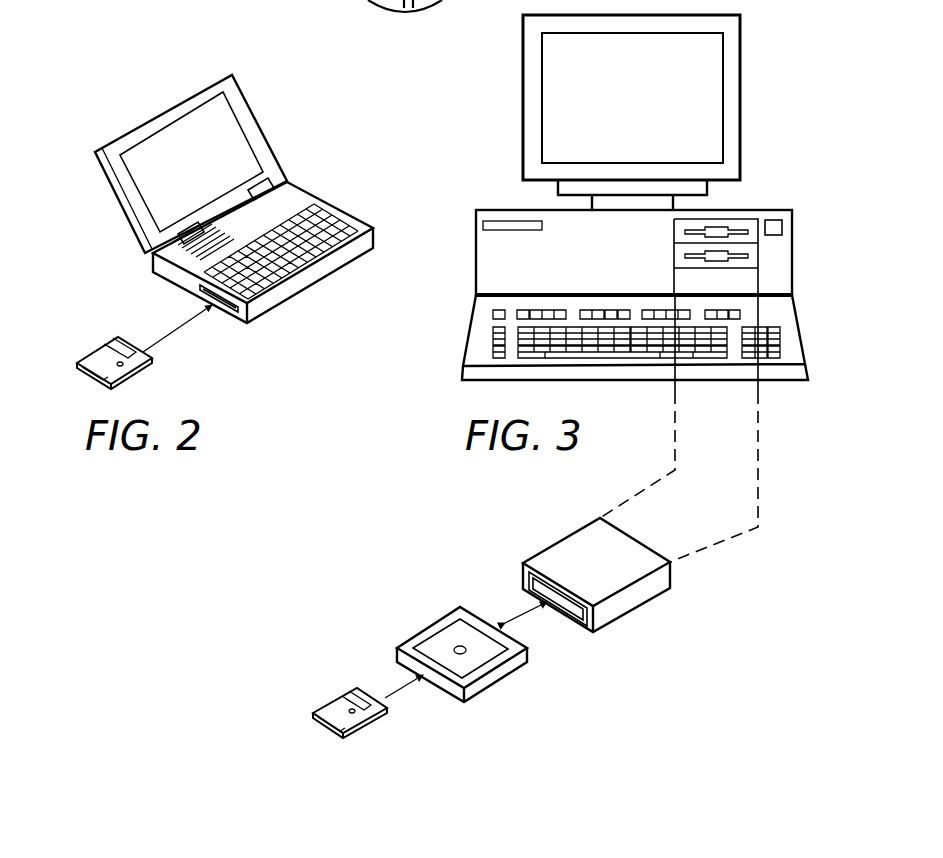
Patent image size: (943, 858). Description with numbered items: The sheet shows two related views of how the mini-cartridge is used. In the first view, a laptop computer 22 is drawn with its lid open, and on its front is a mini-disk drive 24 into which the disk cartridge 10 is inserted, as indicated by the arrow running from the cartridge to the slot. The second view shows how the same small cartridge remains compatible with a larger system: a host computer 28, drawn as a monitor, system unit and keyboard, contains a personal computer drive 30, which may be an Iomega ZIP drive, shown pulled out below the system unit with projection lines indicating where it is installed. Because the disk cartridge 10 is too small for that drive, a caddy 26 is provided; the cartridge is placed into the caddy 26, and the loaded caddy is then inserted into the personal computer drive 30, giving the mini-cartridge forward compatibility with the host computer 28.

In FIG. 2, the disk cartridge 10 is at (102, 357).
In FIG. 3, the disk cartridge 10 is at (332, 702).
In FIG. 2, the laptop computer 22 is at (310, 278).
In FIG. 2, the mini-disk drive 24 is at (220, 308).
In FIG. 3, the caddy 26 is at (450, 617).
In FIG. 3, the host computer 28 is at (760, 210).
In FIG. 3, the personal computer drive 30 is at (587, 523).